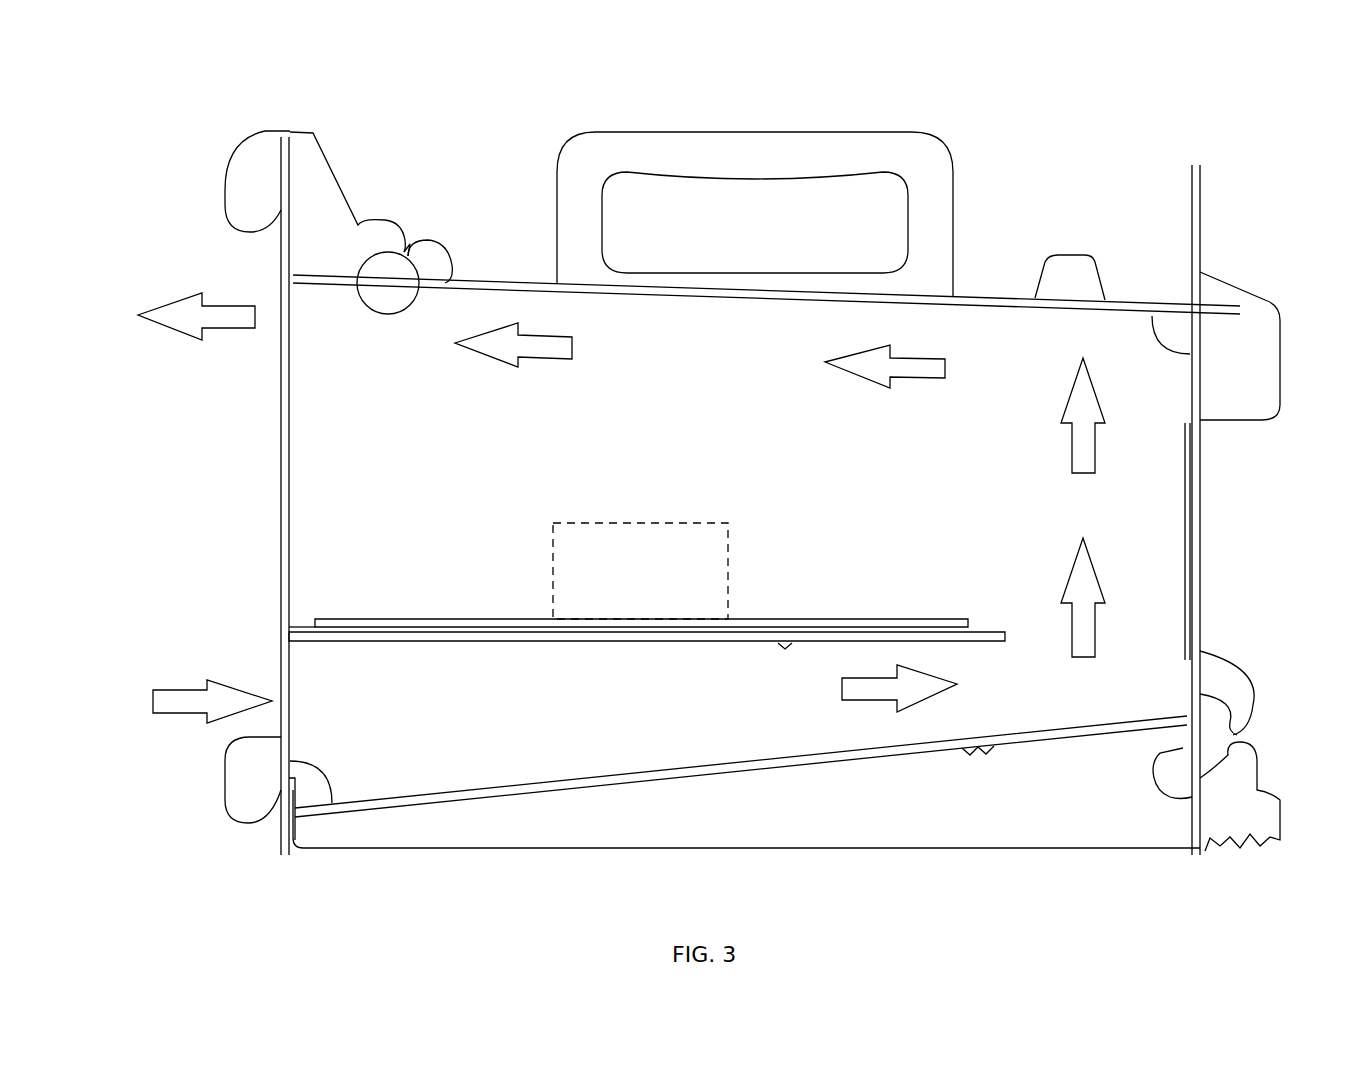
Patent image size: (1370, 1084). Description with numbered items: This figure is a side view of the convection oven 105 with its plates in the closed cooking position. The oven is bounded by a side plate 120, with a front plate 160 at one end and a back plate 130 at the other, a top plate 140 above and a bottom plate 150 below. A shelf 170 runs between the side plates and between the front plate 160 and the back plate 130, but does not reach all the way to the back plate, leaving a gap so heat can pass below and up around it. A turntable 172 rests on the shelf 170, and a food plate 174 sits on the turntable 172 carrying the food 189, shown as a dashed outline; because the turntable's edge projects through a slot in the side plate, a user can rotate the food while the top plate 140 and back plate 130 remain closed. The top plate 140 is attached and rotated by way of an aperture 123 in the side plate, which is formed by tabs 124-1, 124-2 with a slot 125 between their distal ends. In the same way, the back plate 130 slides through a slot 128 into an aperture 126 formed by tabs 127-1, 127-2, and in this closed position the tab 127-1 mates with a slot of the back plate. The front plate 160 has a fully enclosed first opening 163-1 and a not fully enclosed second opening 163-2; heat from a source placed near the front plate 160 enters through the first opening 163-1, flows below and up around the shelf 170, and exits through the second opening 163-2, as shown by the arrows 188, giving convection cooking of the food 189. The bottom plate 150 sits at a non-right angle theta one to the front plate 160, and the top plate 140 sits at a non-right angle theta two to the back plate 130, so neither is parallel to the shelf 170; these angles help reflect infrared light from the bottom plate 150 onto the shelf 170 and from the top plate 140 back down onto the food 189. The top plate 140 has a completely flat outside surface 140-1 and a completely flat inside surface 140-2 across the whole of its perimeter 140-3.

The convection oven 105 is at (234, 84).
The side plate 120 is at (755, 454).
The aperture 123 is at (380, 307).
The tab 124-1 is at (388, 235).
The tab 124-2 is at (432, 253).
The slot 125 is at (410, 240).
The aperture 126 is at (1183, 768).
The tab 127-1 is at (1237, 675).
The tab 127-2 is at (1250, 780).
The slot 128 is at (1250, 735).
The back plate 130 is at (1200, 530).
The top plate 140 is at (483, 277).
The outside surface 140-1 is at (972, 300).
The inside surface 140-2 is at (984, 308).
The perimeter 140-3 is at (1243, 312).
The bottom plate 150 is at (867, 760).
The front plate 160 is at (281, 851).
The first opening 163-1 is at (282, 690).
The second opening 163-2 is at (277, 430).
The shelf 170 is at (392, 642).
The turntable 172 is at (996, 628).
The food plate 174 is at (835, 619).
The arrows 188 is at (147, 282).
The food 189 is at (553, 548).